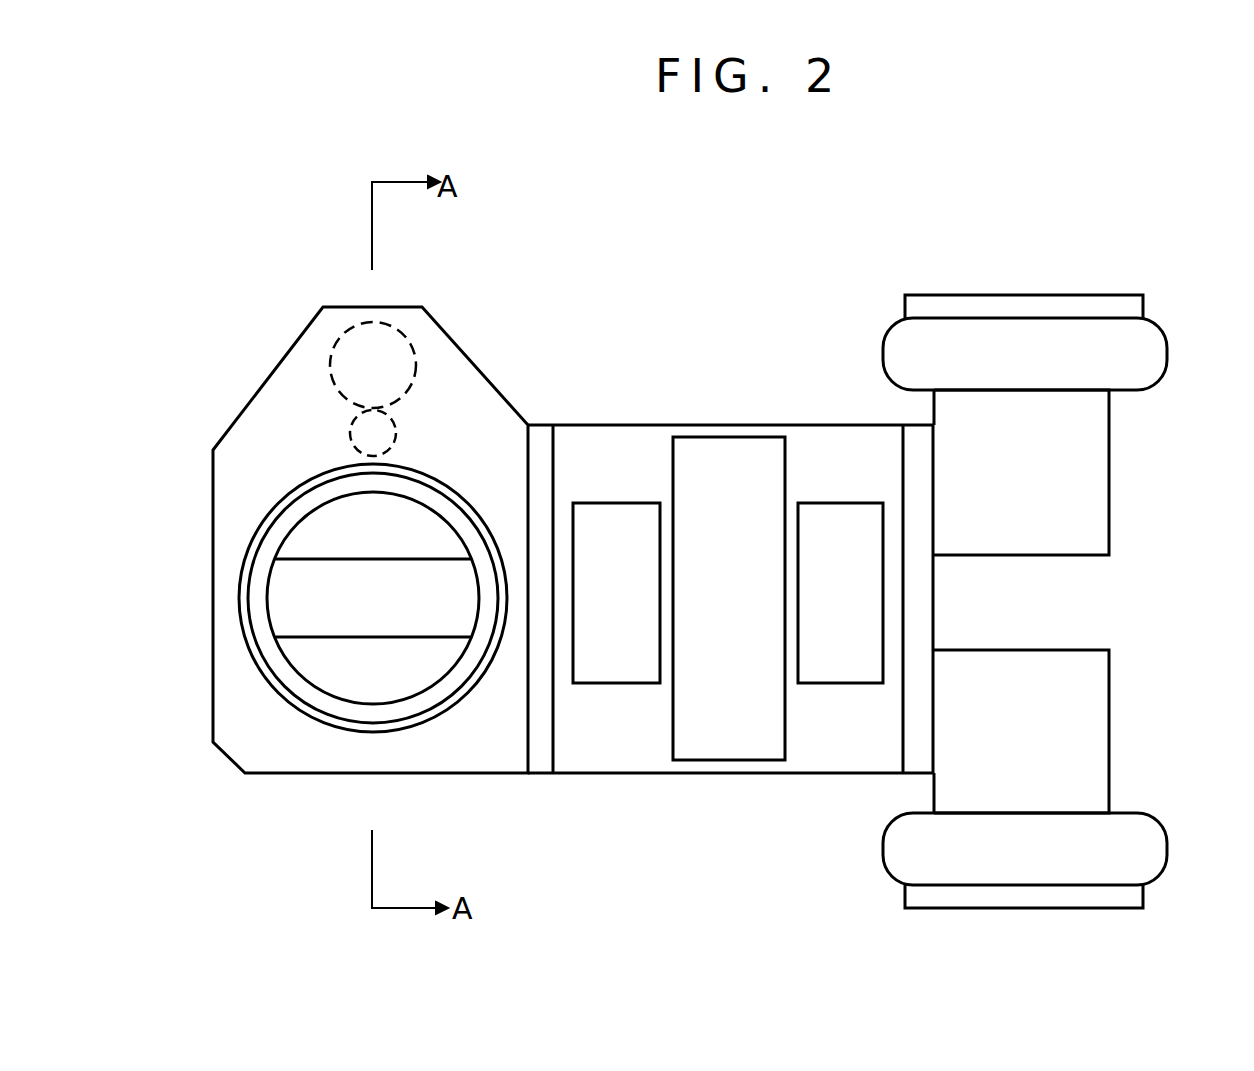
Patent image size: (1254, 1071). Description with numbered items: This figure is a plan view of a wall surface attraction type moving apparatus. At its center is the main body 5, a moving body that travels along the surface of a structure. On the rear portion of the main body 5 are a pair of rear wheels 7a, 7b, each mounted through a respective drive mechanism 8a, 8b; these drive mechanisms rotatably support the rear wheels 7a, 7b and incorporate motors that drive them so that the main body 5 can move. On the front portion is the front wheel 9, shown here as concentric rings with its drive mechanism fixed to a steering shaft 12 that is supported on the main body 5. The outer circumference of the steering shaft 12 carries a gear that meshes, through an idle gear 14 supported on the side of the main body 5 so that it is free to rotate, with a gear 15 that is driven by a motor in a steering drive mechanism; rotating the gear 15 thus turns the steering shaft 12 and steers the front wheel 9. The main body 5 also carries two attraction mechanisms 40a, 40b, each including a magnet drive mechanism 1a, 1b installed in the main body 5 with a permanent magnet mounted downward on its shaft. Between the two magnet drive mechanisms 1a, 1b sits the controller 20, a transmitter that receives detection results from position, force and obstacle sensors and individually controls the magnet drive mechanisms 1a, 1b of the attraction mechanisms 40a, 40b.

The magnet drive mechanism 1a is at (613, 503).
The magnet drive mechanism 1b is at (830, 503).
The controller 20 is at (722, 437).
The main body 5 is at (633, 773).
The rear wheel 7a is at (1167, 850).
The rear wheel 7b is at (1167, 370).
The drive mechanism 8a is at (1109, 732).
The drive mechanism 8b is at (1109, 510).
The front wheel 9 is at (288, 607).
The steering shaft 12 is at (325, 700).
The idle gear 14 is at (392, 418).
The gear 15 is at (395, 333).
The attraction mechanism 40a is at (642, 470).
The attraction mechanism 40b is at (863, 460).